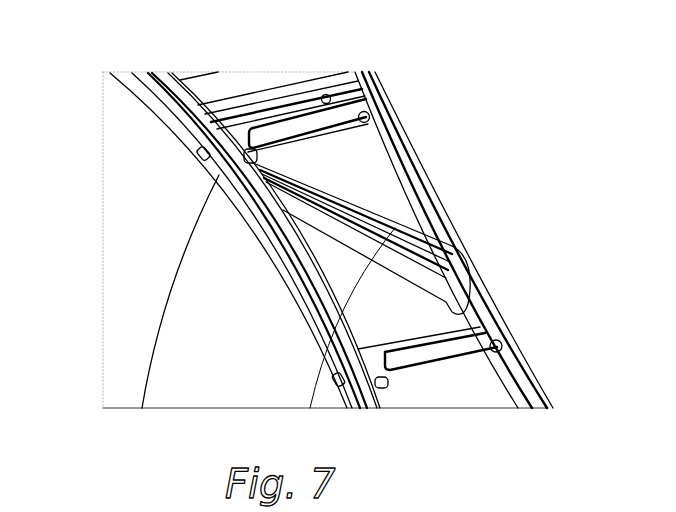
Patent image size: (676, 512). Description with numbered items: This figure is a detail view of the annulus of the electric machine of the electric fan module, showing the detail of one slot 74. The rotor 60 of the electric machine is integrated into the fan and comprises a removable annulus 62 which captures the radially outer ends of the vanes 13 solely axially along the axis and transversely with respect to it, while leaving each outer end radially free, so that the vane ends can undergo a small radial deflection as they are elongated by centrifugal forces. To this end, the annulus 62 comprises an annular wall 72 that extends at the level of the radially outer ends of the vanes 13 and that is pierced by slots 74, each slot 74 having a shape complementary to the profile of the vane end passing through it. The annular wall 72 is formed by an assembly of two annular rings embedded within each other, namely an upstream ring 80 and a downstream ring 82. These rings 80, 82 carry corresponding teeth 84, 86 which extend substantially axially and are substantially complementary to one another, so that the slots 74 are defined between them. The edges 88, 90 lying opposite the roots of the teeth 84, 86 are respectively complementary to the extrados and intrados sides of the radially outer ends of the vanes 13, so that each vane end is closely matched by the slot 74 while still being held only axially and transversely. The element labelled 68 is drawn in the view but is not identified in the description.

The vane 13 is at (268, 291).
The rotor 60 is at (364, 75).
The removable annulus 62 is at (446, 231).
The upper crossbar 68 is at (238, 87).
The annular wall 72 is at (367, 170).
The slot 74 is at (402, 225).
The upstream ring 80 is at (412, 311).
The downstream ring 82 is at (434, 247).
The tooth 84 is at (322, 245).
The tooth 86 is at (308, 157).
The edge 88 is at (342, 390).
The edge 90 is at (345, 213).